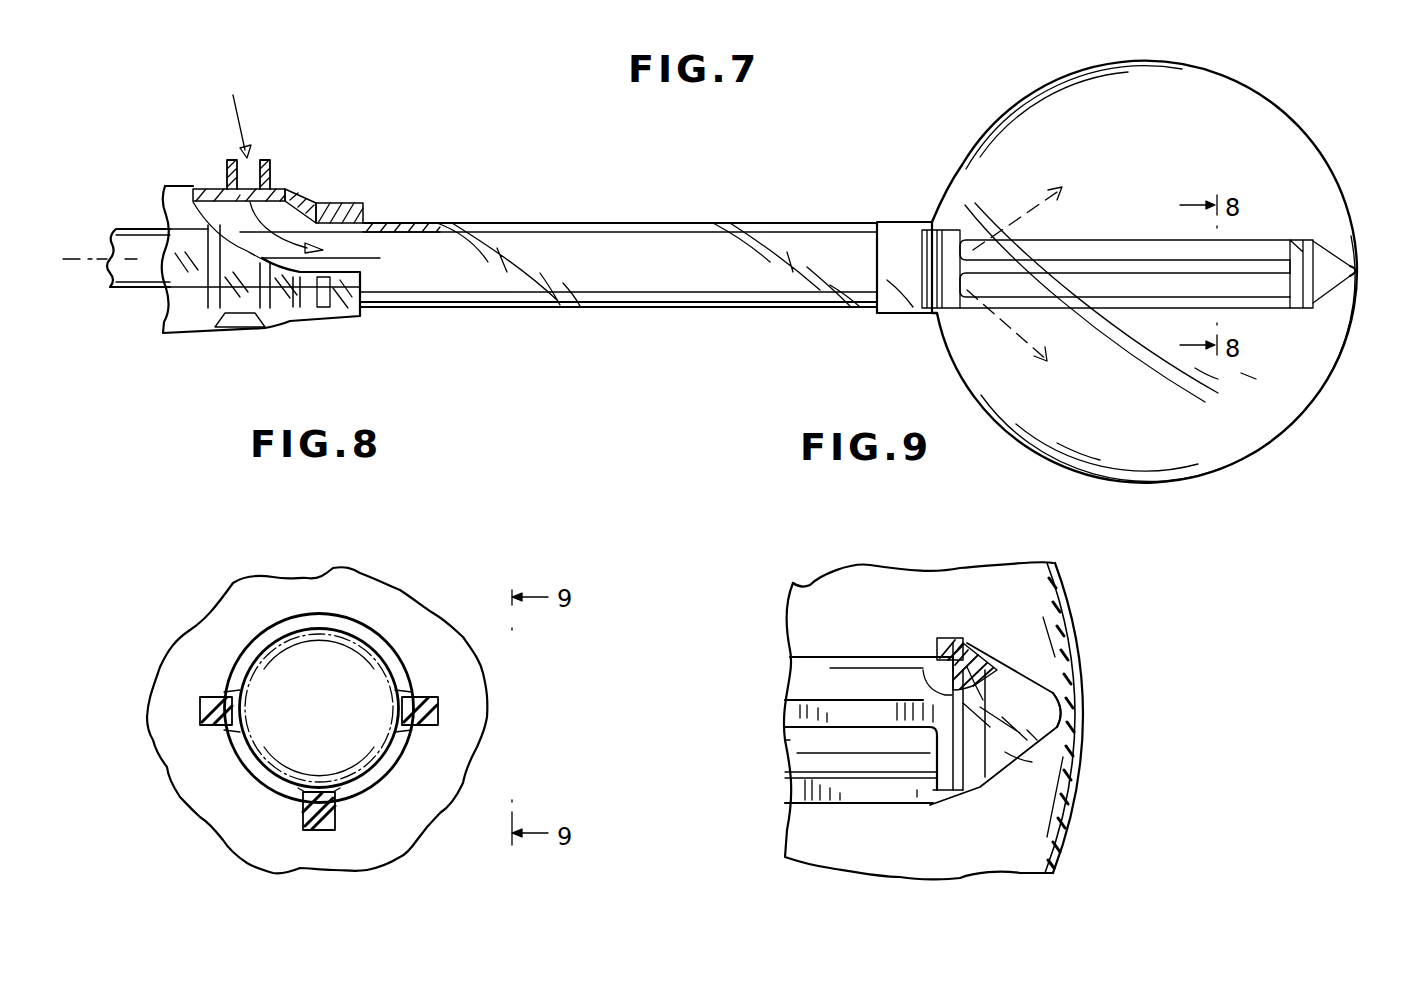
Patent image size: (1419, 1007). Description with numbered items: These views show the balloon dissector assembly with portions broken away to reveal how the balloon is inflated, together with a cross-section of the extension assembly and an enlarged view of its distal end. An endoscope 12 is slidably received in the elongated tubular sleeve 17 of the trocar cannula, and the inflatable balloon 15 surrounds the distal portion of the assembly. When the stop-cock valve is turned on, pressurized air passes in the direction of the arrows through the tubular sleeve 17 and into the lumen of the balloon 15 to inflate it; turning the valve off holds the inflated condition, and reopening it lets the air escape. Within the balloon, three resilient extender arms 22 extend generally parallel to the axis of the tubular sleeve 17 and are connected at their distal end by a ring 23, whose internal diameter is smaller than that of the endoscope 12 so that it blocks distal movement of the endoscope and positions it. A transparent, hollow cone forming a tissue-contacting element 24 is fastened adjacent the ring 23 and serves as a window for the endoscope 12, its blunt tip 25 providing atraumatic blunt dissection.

In FIG. 7, the endoscope 12 is at (145, 228).
In FIG. 8, the endoscope 12 is at (347, 687).
In FIG. 9, the endoscope 12 is at (870, 677).
In FIG. 7, the inflatable balloon 15 is at (1207, 97).
In FIG. 8, the inflatable balloon 15 is at (317, 720).
In FIG. 9, the inflatable balloon 15 is at (933, 720).
In FIG. 7, the tubular sleeve 17 is at (612, 308).
In FIG. 7, the extender arms 22 is at (1088, 272).
In FIG. 8, the extender arms 22 is at (205, 700).
In FIG. 7, the ring 23 is at (1300, 240).
In FIG. 9, the ring 23 is at (960, 650).
In FIG. 7, the tissue-contacting element 24 is at (1323, 267).
In FIG. 9, the tissue-contacting element 24 is at (1023, 697).
In FIG. 7, the blunt tip 25 is at (1352, 270).
In FIG. 9, the blunt tip 25 is at (1063, 710).